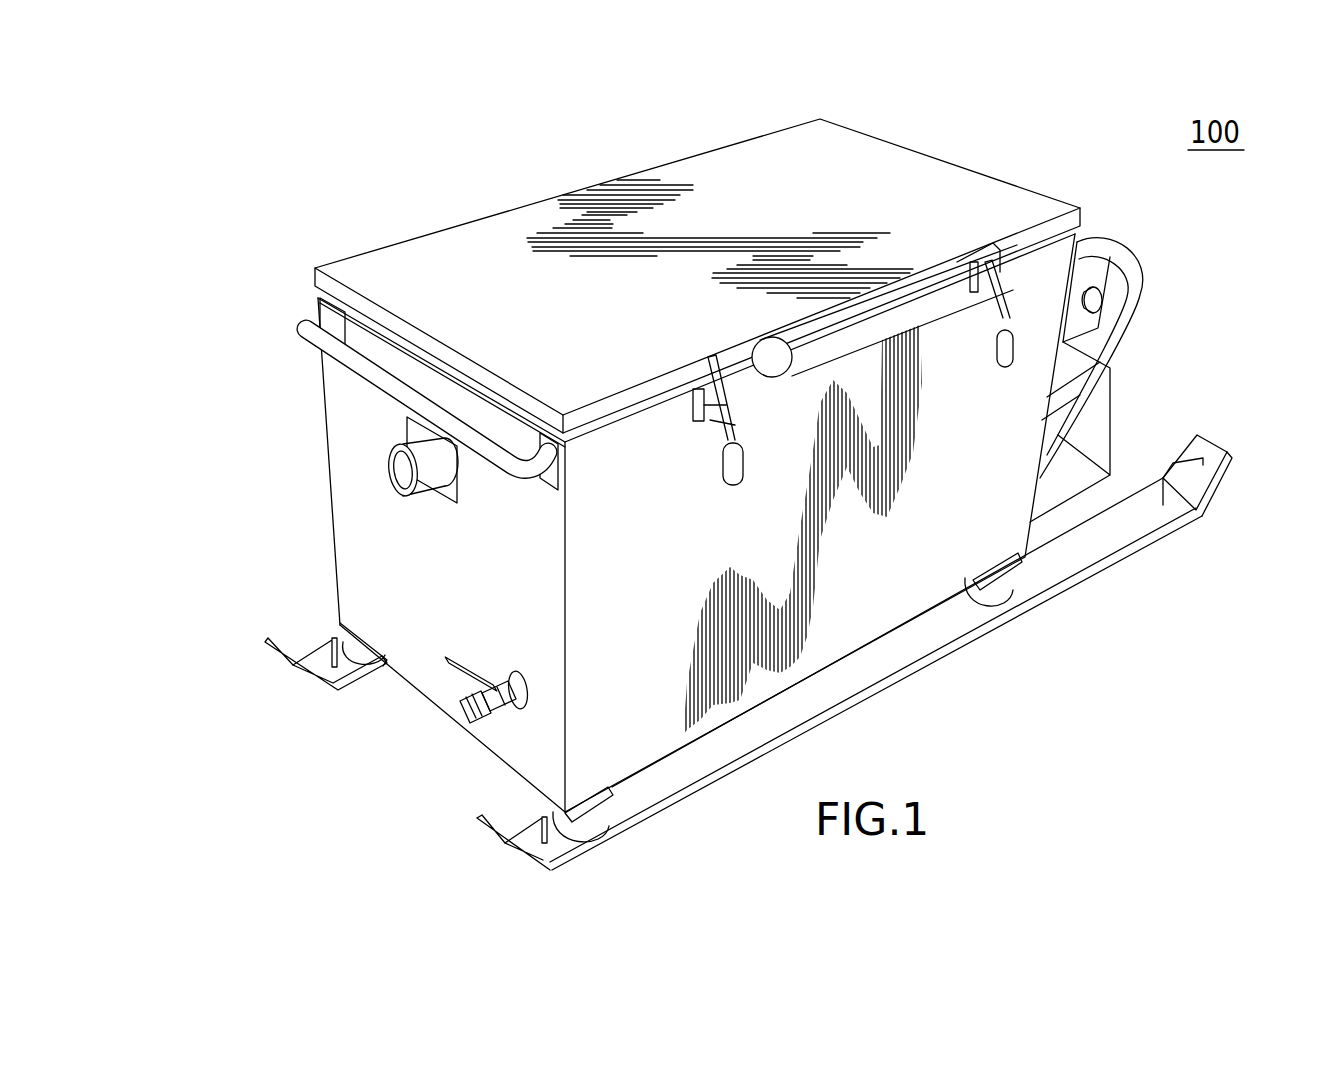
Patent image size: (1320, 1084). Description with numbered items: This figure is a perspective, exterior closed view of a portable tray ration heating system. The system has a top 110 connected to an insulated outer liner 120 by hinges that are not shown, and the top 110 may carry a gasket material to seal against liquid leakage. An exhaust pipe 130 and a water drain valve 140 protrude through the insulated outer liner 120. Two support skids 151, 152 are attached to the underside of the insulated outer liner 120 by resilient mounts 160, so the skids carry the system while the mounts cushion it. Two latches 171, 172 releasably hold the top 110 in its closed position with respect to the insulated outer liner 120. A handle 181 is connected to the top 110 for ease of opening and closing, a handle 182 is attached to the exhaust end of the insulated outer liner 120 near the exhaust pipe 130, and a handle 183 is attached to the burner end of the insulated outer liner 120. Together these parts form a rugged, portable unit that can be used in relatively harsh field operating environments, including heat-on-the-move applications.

The top 110 is at (825, 172).
The insulated outer liner 120 is at (375, 548).
The exhaust pipe 130 is at (388, 464).
The water drain valve 140 is at (462, 720).
The support skid 151 is at (285, 658).
The support skid 152 is at (1150, 537).
The resilient mount 160 is at (610, 830).
The latch 171 is at (1008, 372).
The latch 172 is at (991, 313).
The handle 181 is at (933, 300).
The handle 182 is at (303, 318).
The handle 183 is at (1140, 270).